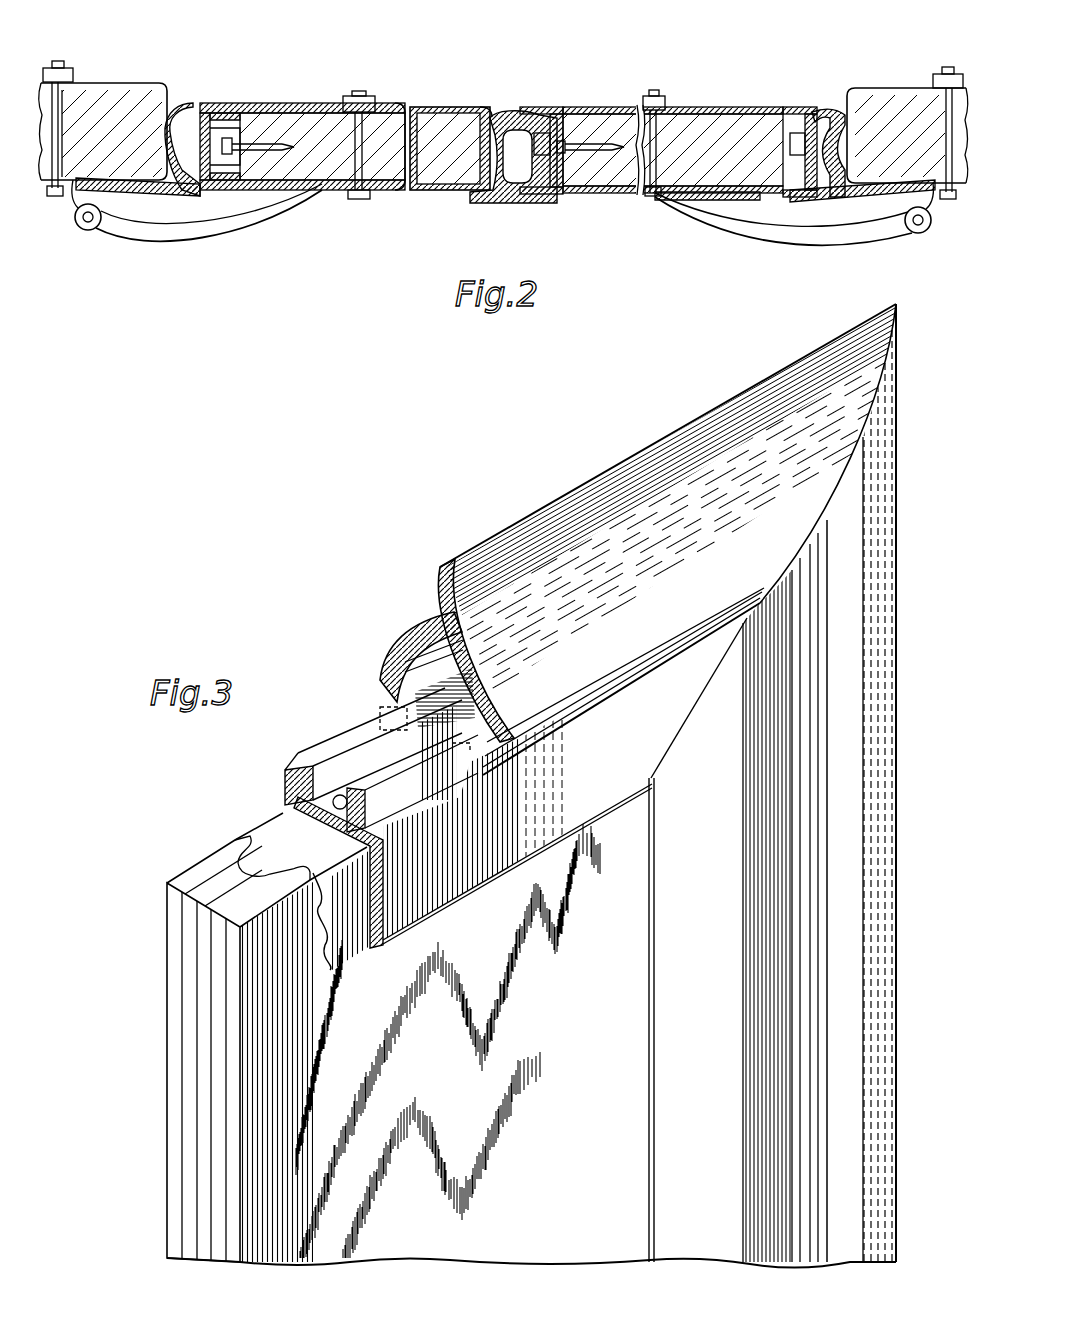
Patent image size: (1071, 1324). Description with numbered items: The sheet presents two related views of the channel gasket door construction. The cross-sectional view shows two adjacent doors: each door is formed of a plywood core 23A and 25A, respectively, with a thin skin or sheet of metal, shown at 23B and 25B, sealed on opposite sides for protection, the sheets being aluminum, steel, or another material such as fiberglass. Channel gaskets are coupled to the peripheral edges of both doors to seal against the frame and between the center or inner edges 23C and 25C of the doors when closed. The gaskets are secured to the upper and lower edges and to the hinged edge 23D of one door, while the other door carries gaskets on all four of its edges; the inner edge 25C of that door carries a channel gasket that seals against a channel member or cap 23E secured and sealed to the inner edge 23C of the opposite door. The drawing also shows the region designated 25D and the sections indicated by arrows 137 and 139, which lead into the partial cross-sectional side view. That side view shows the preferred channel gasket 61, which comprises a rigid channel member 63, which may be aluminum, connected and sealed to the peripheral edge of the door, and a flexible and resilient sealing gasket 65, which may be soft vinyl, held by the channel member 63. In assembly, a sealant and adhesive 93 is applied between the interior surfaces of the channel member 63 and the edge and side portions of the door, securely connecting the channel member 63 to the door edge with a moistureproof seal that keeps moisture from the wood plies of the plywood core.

In FIG. 2, the plywood core 23A is at (313, 143).
In FIG. 2, the thin sheet 23B is at (372, 112).
In FIG. 2, the center or inner edge 23C is at (480, 105).
In FIG. 2, the hinged edge 23D is at (248, 100).
In FIG. 2, the channel member or cap 23E is at (510, 203).
In FIG. 2, the plywood core 25A is at (702, 133).
In FIG. 2, the thin sheet 25B is at (683, 118).
In FIG. 2, the center or inner edge 25C is at (552, 108).
In FIG. 2, the edge member 25D is at (792, 108).
In FIG. 2, the door section 137 is at (380, 250).
In FIG. 2, the door section 139 is at (614, 250).
In FIG. 3, the channel gasket 61 is at (355, 722).
In FIG. 3, the rigid channel member 63 is at (298, 762).
In FIG. 3, the flexible and resilient sealing gasket 65 is at (398, 664).
In FIG. 3, the sealant and adhesive 93 is at (273, 830).